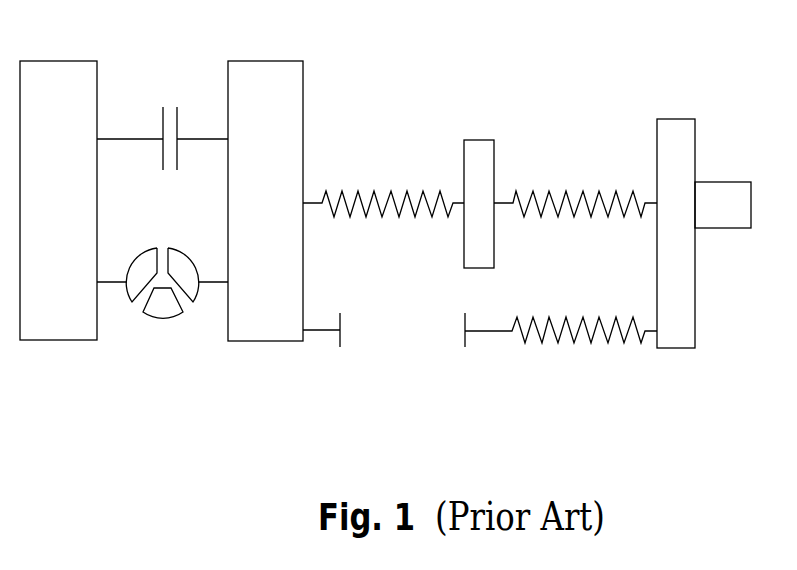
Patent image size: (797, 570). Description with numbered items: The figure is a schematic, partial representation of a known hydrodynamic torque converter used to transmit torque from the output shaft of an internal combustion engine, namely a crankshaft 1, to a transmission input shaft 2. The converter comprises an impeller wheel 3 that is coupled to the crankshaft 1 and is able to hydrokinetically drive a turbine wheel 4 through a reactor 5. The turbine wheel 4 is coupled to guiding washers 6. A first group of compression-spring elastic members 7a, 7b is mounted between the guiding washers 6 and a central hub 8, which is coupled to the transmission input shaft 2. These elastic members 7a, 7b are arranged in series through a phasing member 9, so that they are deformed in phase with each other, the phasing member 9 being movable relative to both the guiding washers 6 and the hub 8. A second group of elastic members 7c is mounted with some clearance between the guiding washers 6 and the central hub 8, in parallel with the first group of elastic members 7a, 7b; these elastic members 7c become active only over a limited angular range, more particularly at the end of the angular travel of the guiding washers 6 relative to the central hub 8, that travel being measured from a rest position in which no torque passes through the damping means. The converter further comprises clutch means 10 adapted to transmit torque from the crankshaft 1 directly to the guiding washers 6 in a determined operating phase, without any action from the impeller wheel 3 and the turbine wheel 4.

The crankshaft 1 is at (62, 313).
The transmission input shaft 2 is at (717, 198).
The impeller wheel 3 is at (133, 293).
The turbine wheel 4 is at (190, 292).
The reactor 5 is at (165, 306).
The guiding washers 6 is at (278, 98).
The elastic member of the first group 7a is at (386, 196).
The elastic member of the first group 7b is at (558, 195).
The elastic member of the second group 7c is at (588, 340).
The central hub 8 is at (672, 133).
The phasing member 9 is at (477, 152).
The clutch means 10 is at (171, 105).